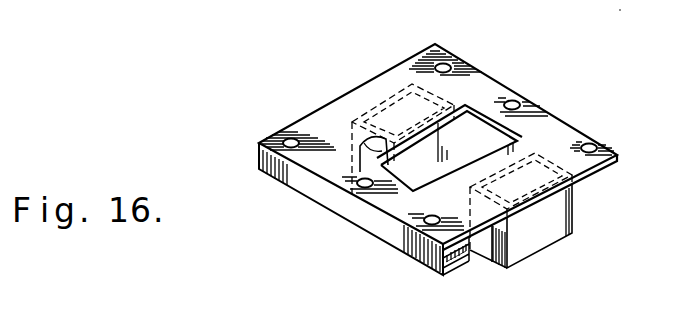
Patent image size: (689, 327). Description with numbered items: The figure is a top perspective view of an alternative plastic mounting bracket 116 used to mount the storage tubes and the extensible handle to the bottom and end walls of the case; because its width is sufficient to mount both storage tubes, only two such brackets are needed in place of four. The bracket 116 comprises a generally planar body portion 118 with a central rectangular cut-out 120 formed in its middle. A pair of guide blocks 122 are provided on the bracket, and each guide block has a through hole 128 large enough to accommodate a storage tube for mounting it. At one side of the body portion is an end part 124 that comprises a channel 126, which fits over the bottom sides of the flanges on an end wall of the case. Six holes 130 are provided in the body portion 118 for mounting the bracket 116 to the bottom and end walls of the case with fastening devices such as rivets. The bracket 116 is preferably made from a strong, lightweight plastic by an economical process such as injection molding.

The mounting bracket 116 is at (585, 79).
The body portion 118 is at (459, 64).
The central rectangular cut-out 120 is at (557, 111).
The guide blocks 122 is at (464, 115).
The end part 124 is at (402, 209).
The channel 126 is at (462, 271).
The through holes 128 is at (360, 153).
The holes 130 is at (439, 61).